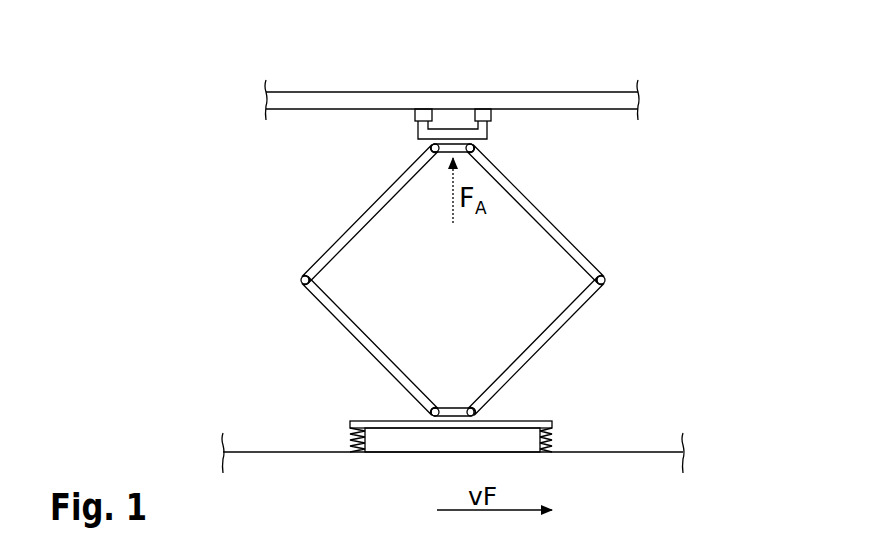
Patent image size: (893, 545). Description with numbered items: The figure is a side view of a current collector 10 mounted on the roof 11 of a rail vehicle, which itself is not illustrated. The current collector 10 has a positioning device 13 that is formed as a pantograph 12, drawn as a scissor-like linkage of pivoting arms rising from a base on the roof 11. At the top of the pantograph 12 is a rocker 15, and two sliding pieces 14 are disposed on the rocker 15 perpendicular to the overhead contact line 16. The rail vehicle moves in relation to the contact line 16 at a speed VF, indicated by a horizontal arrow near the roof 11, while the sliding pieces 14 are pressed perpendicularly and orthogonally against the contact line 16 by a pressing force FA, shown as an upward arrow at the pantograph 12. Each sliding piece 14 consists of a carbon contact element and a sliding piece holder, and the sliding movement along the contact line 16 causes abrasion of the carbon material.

The current collector 10 is at (375, 280).
The roof 11 is at (632, 449).
The pantograph 12 is at (307, 298).
The positioning device 13 is at (262, 278).
The sliding piece 14 is at (418, 112).
The rocker 15 is at (452, 132).
The contact line 16 is at (570, 98).